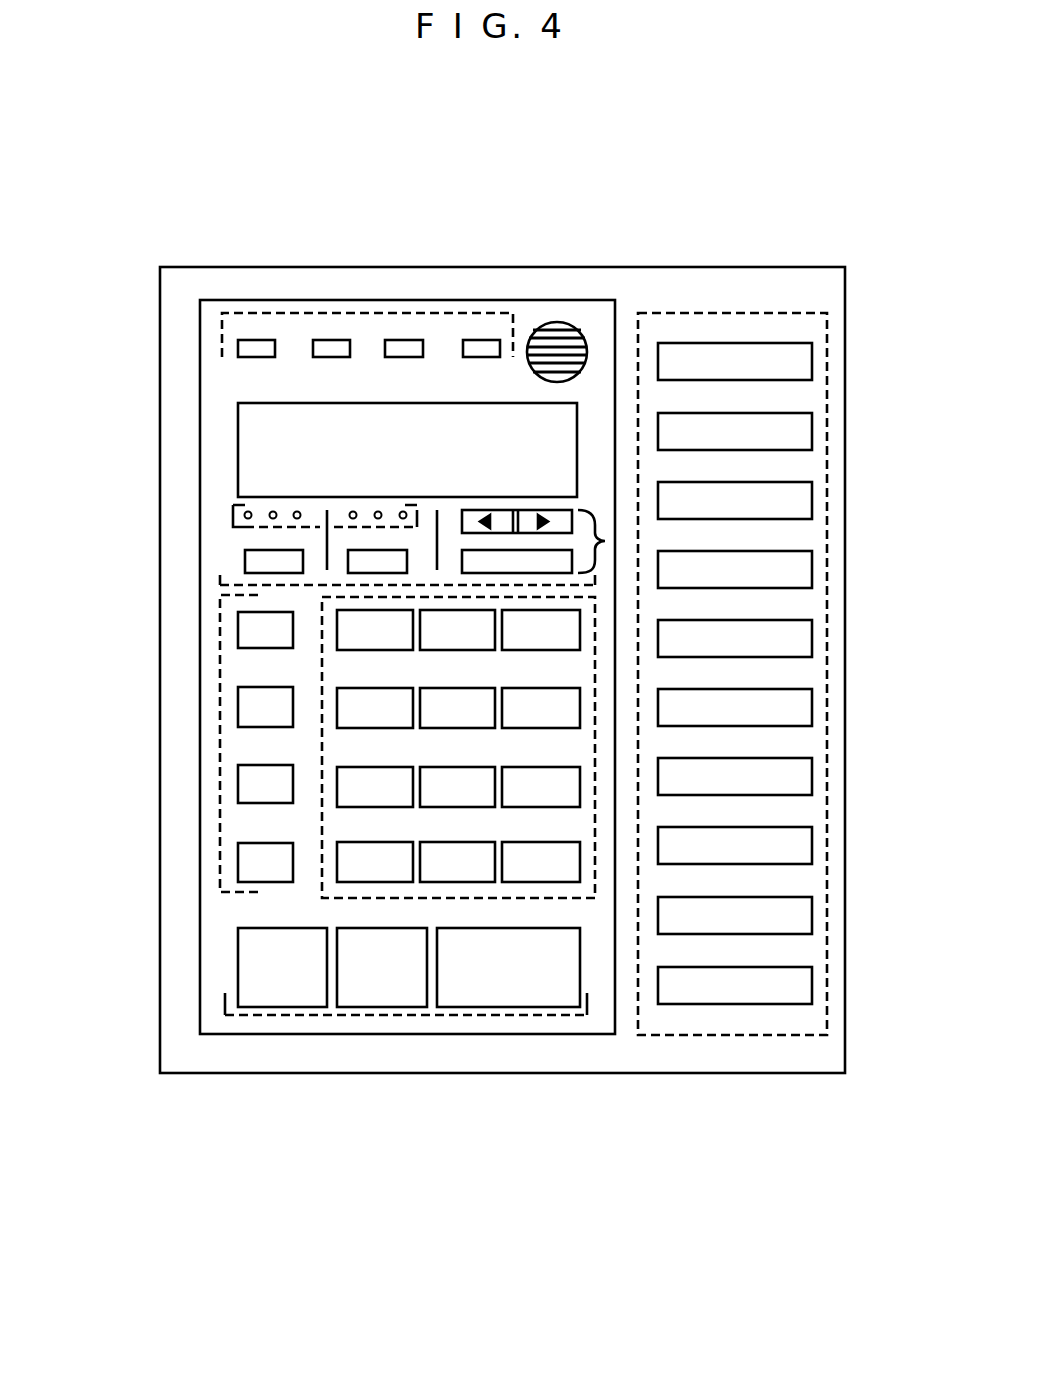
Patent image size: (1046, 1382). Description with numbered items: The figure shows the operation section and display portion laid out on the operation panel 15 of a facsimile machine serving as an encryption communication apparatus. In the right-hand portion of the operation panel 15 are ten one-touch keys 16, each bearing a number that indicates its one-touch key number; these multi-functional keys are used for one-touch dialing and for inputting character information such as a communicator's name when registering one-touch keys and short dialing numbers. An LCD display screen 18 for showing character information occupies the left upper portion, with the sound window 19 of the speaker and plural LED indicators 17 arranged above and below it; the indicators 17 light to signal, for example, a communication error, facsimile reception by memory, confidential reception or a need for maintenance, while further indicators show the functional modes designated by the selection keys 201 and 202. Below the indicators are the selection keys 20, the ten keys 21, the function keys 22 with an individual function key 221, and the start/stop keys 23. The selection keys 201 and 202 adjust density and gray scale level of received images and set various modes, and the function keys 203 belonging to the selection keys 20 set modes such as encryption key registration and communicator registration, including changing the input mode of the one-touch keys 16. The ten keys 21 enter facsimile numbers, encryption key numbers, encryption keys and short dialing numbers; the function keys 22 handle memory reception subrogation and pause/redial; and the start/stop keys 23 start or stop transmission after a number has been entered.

The operation panel 15 is at (845, 522).
The one-touch keys 16 is at (732, 313).
The LED indicators 17 is at (322, 313).
The LCD display screen 18 is at (238, 462).
The sound window 19 is at (560, 322).
The selection keys 20 is at (342, 524).
The selection key 201 is at (297, 550).
The selection key 202 is at (407, 550).
The function keys 203 is at (604, 535).
The ten keys 21 is at (583, 900).
The function keys 22 is at (178, 743).
The mode key 221 is at (241, 863).
The start/stop keys 23 is at (348, 1015).